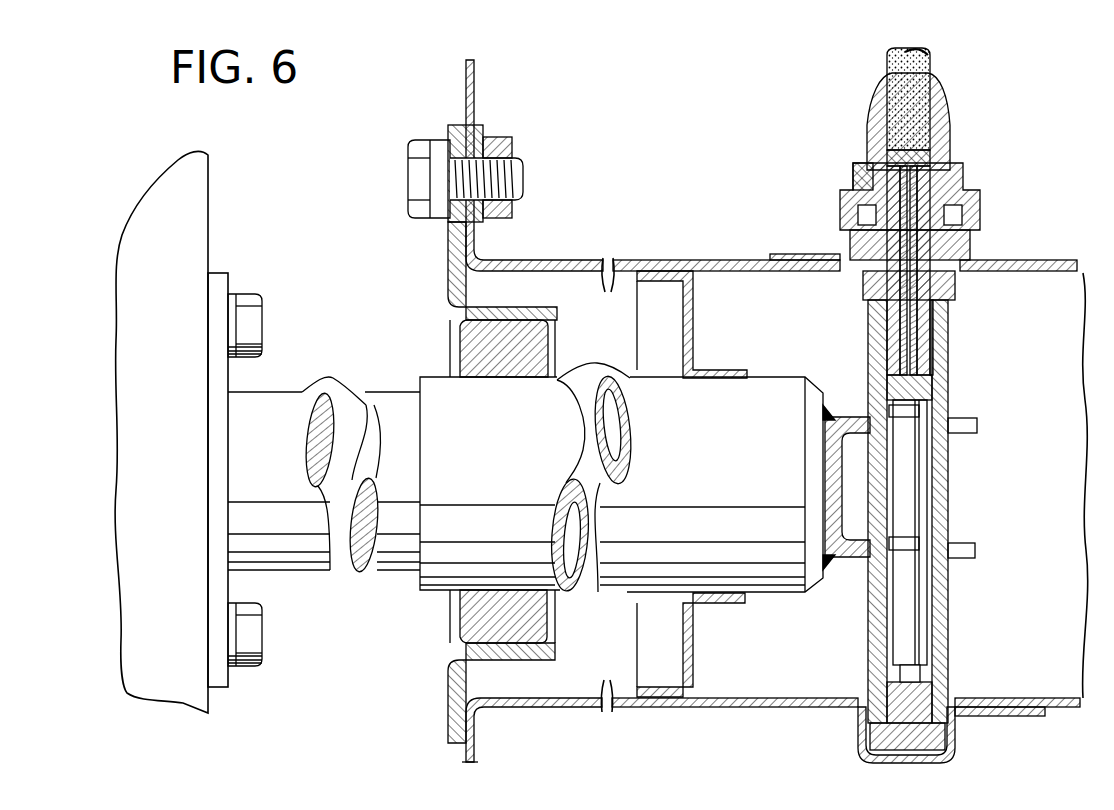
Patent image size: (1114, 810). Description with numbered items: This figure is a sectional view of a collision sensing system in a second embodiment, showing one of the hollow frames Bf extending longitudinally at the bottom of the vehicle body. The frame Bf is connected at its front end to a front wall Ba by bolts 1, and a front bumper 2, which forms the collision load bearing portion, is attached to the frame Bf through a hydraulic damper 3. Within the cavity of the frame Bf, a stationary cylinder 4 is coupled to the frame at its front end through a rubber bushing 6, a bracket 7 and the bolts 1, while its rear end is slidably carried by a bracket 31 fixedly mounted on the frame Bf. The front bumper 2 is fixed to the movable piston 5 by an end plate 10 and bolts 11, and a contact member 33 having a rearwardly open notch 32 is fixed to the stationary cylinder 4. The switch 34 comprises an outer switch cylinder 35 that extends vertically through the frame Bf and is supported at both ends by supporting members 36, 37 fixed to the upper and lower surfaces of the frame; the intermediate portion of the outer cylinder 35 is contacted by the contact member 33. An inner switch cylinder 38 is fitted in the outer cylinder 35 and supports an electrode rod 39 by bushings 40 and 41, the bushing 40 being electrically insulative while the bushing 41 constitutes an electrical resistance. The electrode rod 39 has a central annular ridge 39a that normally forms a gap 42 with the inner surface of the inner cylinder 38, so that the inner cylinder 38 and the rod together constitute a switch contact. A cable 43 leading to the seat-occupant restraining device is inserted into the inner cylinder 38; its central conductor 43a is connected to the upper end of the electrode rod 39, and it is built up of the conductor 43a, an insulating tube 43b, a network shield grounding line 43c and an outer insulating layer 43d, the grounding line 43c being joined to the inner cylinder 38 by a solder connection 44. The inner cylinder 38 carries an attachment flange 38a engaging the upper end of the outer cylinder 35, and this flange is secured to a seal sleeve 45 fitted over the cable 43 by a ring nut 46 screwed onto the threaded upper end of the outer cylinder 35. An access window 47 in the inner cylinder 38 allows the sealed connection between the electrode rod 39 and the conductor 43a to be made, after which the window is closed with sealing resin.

The bolts 1 is at (409, 181).
The front bumper 2 is at (195, 205).
The hydraulic damper 3 is at (417, 372).
The stationary cylinder 4 is at (597, 375).
The movable piston 5 is at (340, 392).
The rubber bushing 6 is at (465, 349).
The bracket 7 is at (456, 273).
The end plate 10 is at (215, 284).
The bolts 11 is at (250, 326).
The bracket 31 is at (694, 325).
The notch 32 is at (870, 418).
The contact member 33 is at (832, 480).
The switch 34 is at (907, 402).
The outer switch cylinder 35 is at (945, 340).
The supporting member 36 is at (863, 290).
The supporting member 37 is at (860, 733).
The inner switch cylinder 38 is at (940, 503).
The attachment flange 38a is at (962, 178).
The electrode rod 39 is at (915, 620).
The central annular ridge 39a is at (910, 543).
The bushing 40 is at (928, 388).
The bushing 41 is at (928, 692).
The gap 42 is at (873, 566).
The cable 43 is at (931, 60).
The conductor 43a is at (898, 318).
The insulating tube 43b is at (920, 318).
The network shield grounding line 43c is at (935, 283).
The core base 43d is at (946, 155).
The solder connection 44 is at (870, 256).
The seal sleeve 45 is at (868, 120).
The ring nut 46 is at (858, 172).
The access window 47 is at (882, 352).
The front wall Ba is at (467, 92).
The hollow frames Bf is at (592, 268).